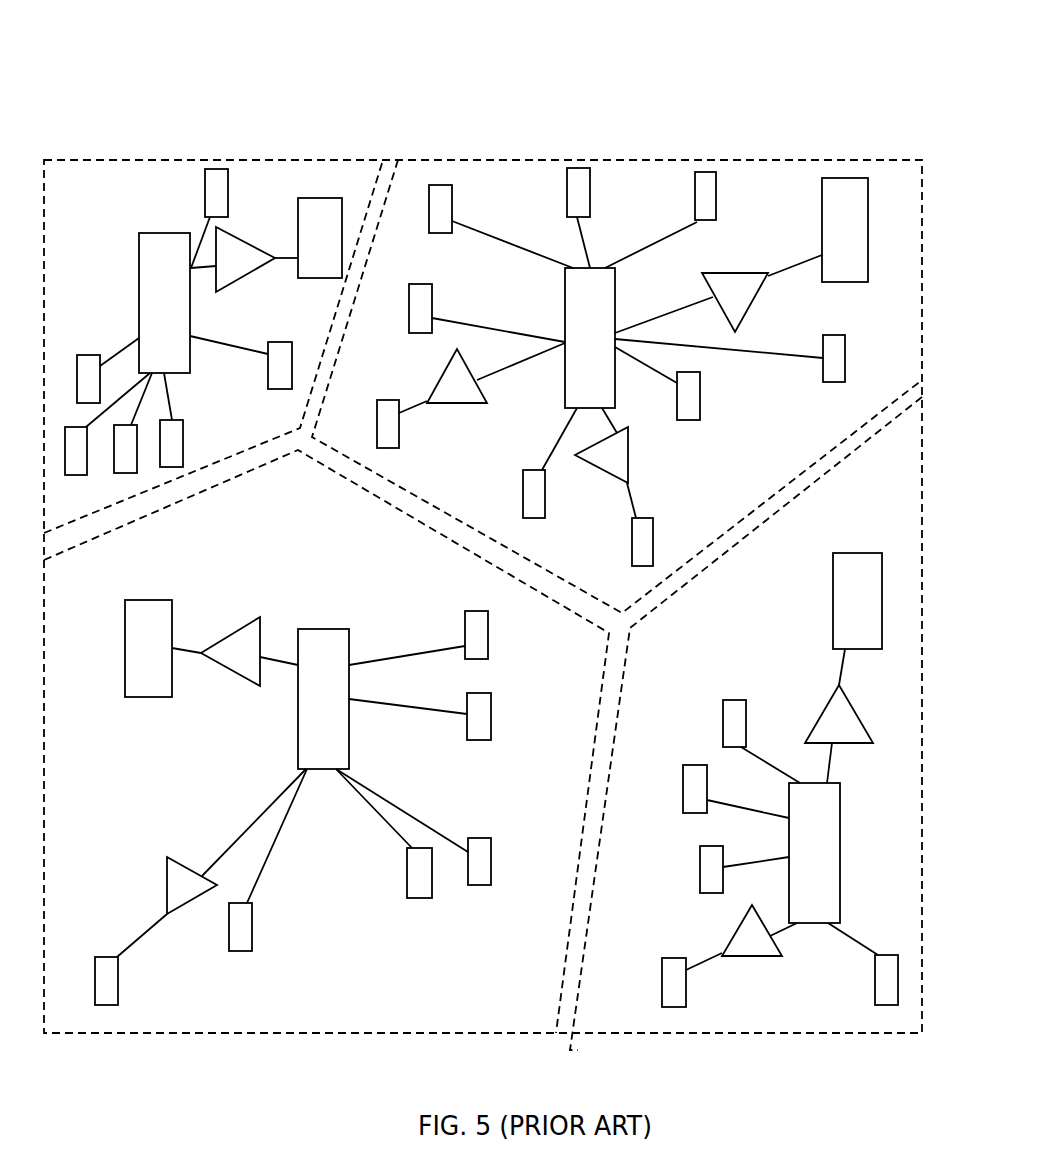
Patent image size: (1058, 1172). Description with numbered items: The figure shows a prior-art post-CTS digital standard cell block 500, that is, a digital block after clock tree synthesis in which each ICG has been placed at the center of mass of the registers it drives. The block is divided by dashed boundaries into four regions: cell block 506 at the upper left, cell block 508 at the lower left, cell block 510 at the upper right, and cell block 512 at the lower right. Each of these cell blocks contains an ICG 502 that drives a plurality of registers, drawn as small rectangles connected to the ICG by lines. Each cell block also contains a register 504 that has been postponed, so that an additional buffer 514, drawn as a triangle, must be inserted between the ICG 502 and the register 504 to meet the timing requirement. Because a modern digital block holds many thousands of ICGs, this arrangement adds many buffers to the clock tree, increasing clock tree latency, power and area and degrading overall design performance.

The post-CTS digital standard cell block 500 is at (872, 68).
The ICG 502 is at (185, 314).
The register 504 is at (342, 252).
The cell block 506 is at (108, 232).
The cell block 508 is at (297, 538).
The cell block 510 is at (795, 456).
The cell block 512 is at (903, 514).
The buffer 514 is at (262, 272).